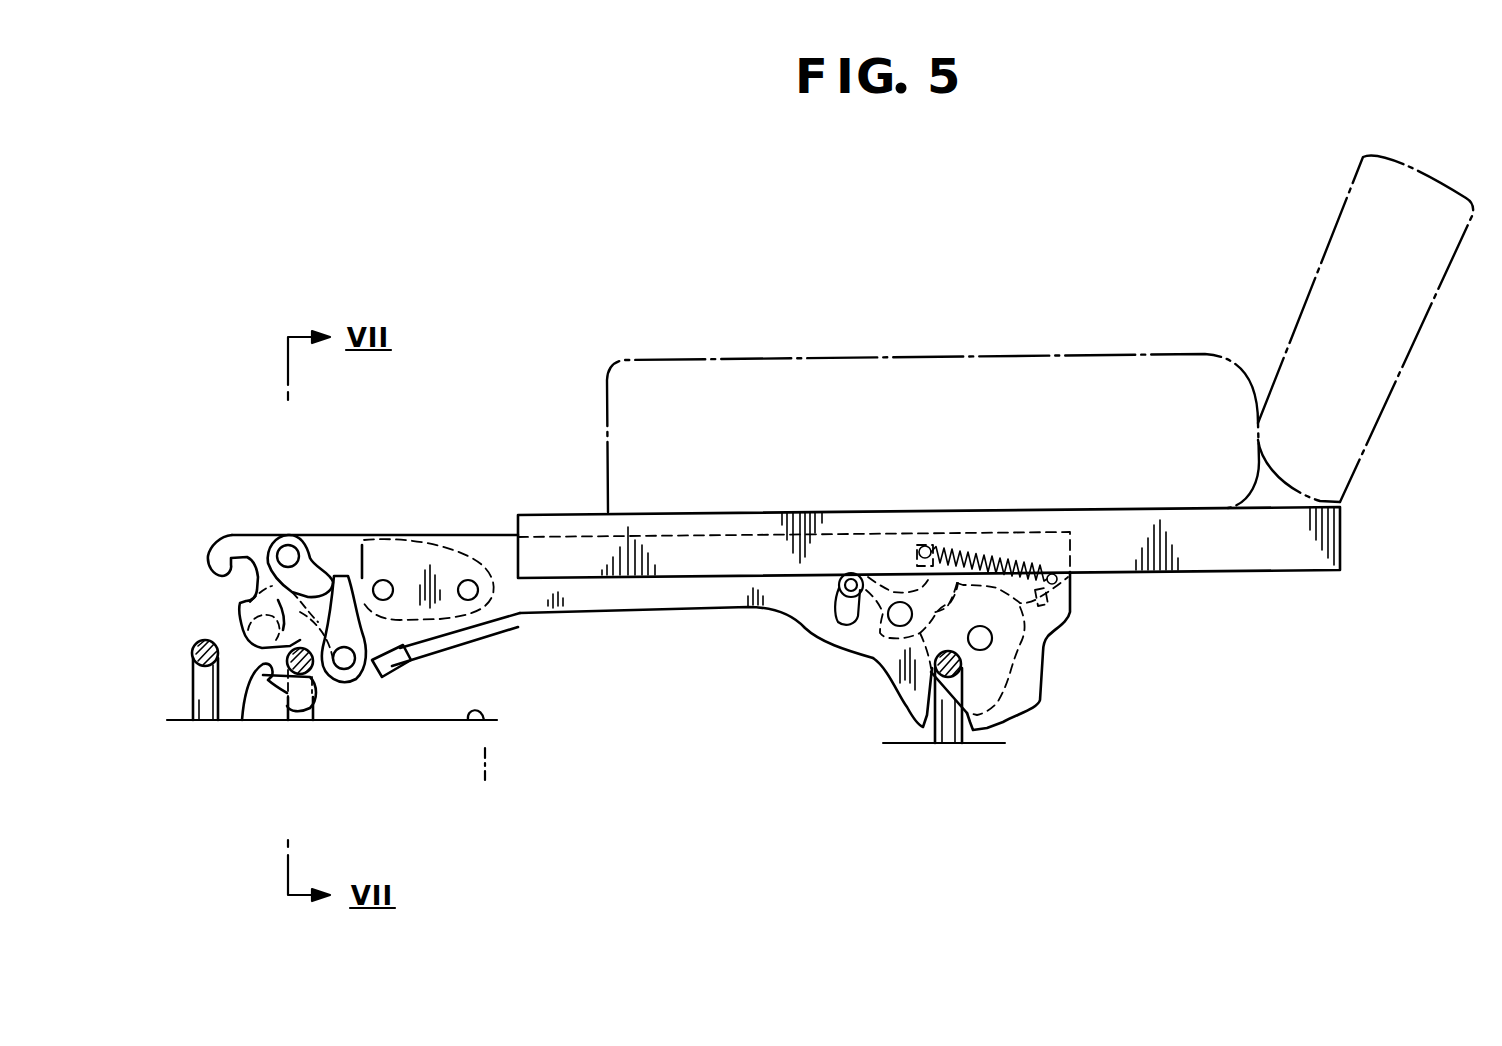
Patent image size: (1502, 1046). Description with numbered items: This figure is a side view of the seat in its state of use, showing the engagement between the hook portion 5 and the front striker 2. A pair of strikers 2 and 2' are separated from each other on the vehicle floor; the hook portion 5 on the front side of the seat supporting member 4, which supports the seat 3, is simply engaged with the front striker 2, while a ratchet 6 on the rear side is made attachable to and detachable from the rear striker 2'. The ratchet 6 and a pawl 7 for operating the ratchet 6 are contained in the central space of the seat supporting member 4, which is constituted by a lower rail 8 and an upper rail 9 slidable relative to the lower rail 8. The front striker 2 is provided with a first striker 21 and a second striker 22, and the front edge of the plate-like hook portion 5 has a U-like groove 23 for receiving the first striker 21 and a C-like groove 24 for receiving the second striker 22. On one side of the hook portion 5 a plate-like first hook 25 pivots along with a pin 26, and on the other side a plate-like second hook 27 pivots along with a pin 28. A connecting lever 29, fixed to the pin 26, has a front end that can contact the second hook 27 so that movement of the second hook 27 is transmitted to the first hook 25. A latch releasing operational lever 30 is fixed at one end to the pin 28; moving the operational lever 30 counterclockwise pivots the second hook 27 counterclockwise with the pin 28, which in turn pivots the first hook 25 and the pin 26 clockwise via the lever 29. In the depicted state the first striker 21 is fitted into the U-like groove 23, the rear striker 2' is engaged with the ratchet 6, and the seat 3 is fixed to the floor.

The front striker 2 is at (332, 766).
The rear striker 2' is at (944, 733).
The seat 3 is at (907, 363).
The seat supporting member 4 is at (843, 496).
The hook portion 5 is at (352, 683).
The ratchet 6 is at (1017, 655).
The pawl 7 is at (880, 637).
The lower rail 8 is at (710, 607).
The upper rail 9 is at (706, 513).
The first striker 21 is at (326, 702).
The second striker 22 is at (192, 697).
The U-like groove 23 is at (242, 720).
The C-like groove 24 is at (208, 556).
The first hook 25 is at (378, 674).
The pin 26 is at (357, 680).
The second hook 27 is at (316, 562).
The pin 28 is at (290, 553).
The connecting lever 29 is at (362, 582).
The latch releasing operational lever 30 is at (406, 662).